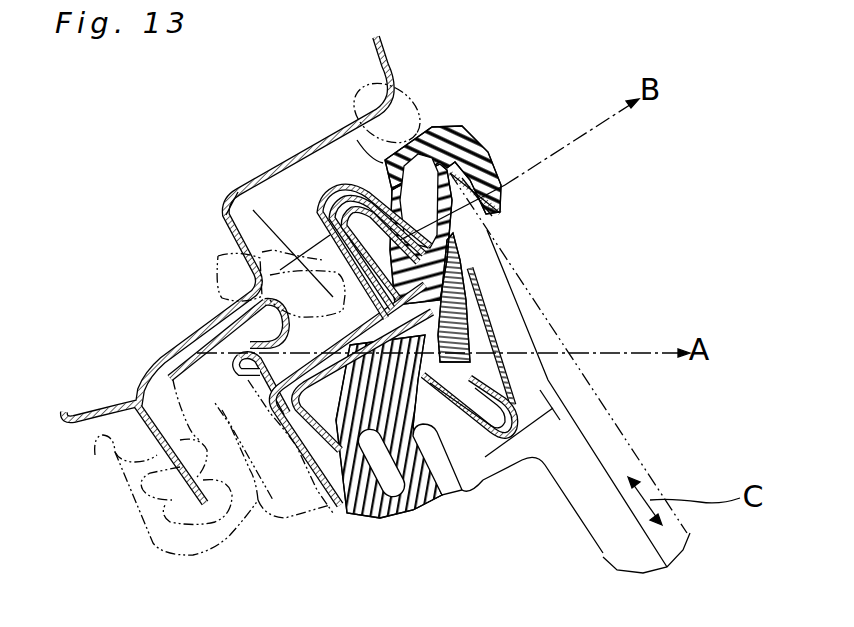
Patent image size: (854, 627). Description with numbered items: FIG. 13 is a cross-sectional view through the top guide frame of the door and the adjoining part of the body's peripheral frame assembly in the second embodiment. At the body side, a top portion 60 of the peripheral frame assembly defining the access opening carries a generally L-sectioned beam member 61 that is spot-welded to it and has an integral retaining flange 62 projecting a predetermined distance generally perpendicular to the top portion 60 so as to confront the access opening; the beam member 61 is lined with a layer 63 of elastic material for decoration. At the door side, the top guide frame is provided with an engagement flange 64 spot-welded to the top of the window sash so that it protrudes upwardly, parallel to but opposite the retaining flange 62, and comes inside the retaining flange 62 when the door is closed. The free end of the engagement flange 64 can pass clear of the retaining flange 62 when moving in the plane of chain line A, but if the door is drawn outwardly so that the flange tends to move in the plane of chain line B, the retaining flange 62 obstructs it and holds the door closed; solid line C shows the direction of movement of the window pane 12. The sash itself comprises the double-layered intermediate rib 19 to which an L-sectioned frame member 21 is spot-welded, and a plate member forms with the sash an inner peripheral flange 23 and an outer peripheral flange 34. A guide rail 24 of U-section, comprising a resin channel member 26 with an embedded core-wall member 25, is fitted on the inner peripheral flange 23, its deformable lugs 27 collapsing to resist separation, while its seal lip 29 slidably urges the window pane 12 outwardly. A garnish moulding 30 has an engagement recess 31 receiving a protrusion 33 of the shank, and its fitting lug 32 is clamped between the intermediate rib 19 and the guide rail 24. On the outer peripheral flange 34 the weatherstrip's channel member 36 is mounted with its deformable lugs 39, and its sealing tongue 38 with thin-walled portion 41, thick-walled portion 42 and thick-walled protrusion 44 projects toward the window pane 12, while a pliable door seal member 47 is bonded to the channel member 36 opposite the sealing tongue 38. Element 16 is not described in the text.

The window pane 12 is at (623, 452).
The panel edge portion 16 is at (604, 548).
The intermediate rib 19 is at (222, 212).
The L-sectioned frame member 21 is at (253, 210).
The inner peripheral flange 23 is at (468, 303).
The guide rail 24 is at (490, 482).
The core-wall member 25 is at (470, 338).
The channel member 26 is at (543, 470).
The deformable lugs 27 is at (500, 392).
The seal lip 29 is at (467, 272).
The garnish moulding 30 is at (409, 515).
The engagement recess 31 is at (367, 485).
The fitting lug 32 is at (462, 500).
The protrusion 33 is at (348, 505).
The outer peripheral flange 34 is at (331, 183).
The channel member 36 is at (323, 205).
The sealing tongue 38 is at (452, 128).
The deformable lugs 39 is at (335, 232).
The thin-walled portion 41 is at (468, 226).
The thick-walled portion 42 is at (360, 193).
The thick-walled protrusion 44 is at (488, 177).
The door seal member 47 is at (218, 279).
The top portion of the peripheral frame assembly 60 is at (222, 240).
The L-sectioned beam member 61 is at (175, 356).
The retaining flange 62 is at (262, 345).
The layer of elastic material 63 is at (203, 357).
The engagement flange 64 is at (150, 366).